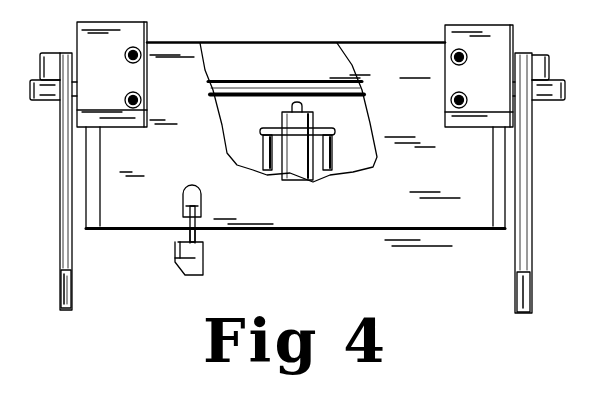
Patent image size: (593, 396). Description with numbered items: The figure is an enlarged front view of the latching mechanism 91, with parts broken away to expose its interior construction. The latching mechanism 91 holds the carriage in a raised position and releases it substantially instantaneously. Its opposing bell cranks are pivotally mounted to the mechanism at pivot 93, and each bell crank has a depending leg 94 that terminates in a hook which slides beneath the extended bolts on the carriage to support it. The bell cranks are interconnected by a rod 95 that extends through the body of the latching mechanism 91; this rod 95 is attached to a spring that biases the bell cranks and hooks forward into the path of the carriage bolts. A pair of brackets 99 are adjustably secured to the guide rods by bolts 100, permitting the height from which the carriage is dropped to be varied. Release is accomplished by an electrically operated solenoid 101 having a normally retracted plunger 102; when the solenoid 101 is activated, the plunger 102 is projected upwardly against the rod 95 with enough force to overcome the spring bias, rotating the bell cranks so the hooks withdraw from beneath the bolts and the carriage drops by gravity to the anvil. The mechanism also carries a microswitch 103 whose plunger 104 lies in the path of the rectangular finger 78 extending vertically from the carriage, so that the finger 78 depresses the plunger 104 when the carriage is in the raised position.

The latching mechanism 91 is at (182, 39).
The pivot 93 is at (72, 100).
The depending leg 94 is at (62, 220).
The rod 95 is at (263, 81).
The brackets 99 is at (147, 23).
The bolts 100 is at (126, 59).
The solenoid 101 is at (258, 157).
The plunger 102 is at (302, 107).
The microswitch 103 is at (185, 195).
The plunger 104 is at (186, 236).
The rectangular finger 78 is at (177, 262).